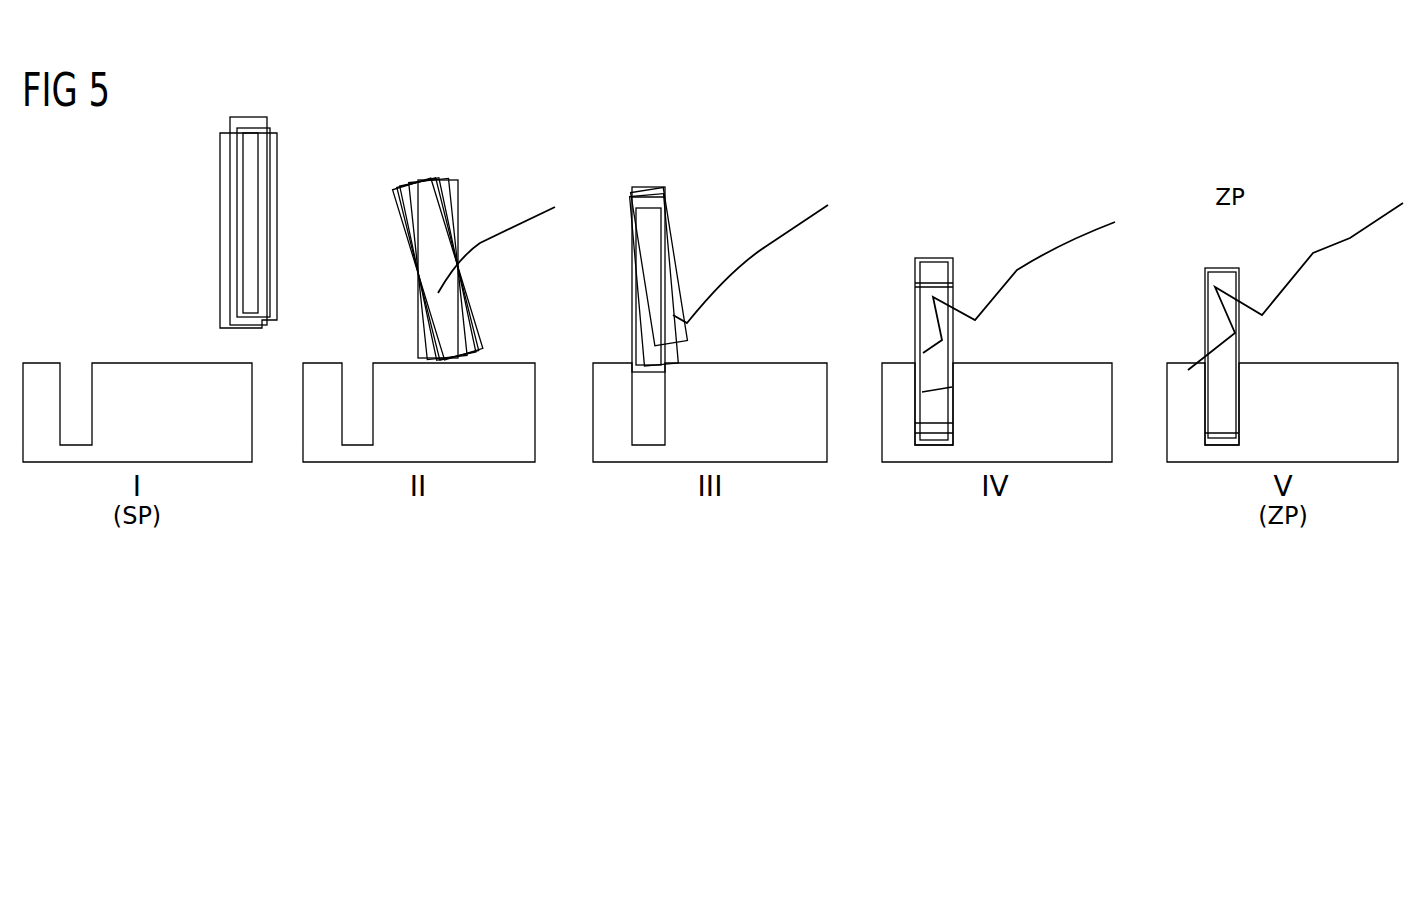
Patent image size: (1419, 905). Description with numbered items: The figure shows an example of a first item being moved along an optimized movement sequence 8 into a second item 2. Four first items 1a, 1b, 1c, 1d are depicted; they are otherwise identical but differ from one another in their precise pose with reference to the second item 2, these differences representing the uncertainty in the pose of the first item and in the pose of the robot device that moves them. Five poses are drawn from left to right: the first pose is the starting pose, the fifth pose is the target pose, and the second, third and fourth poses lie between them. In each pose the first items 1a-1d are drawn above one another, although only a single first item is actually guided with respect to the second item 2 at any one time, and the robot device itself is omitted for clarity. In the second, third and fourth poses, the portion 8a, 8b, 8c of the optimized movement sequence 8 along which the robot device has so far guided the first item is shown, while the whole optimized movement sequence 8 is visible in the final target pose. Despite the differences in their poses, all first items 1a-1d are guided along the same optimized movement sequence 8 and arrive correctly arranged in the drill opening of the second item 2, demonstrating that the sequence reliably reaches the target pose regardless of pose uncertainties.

The first item 1a is at (220, 233).
The first item 1b is at (232, 118).
The first item 1c is at (262, 120).
The first item 1d is at (250, 172).
The second item 2 is at (215, 462).
The optimized movement sequence 8 is at (1365, 222).
The portion of the optimized movement sequence 8a is at (510, 230).
The portion of the optimized movement sequence 8b is at (762, 248).
The portion of the optimized movement sequence 8c is at (1067, 245).